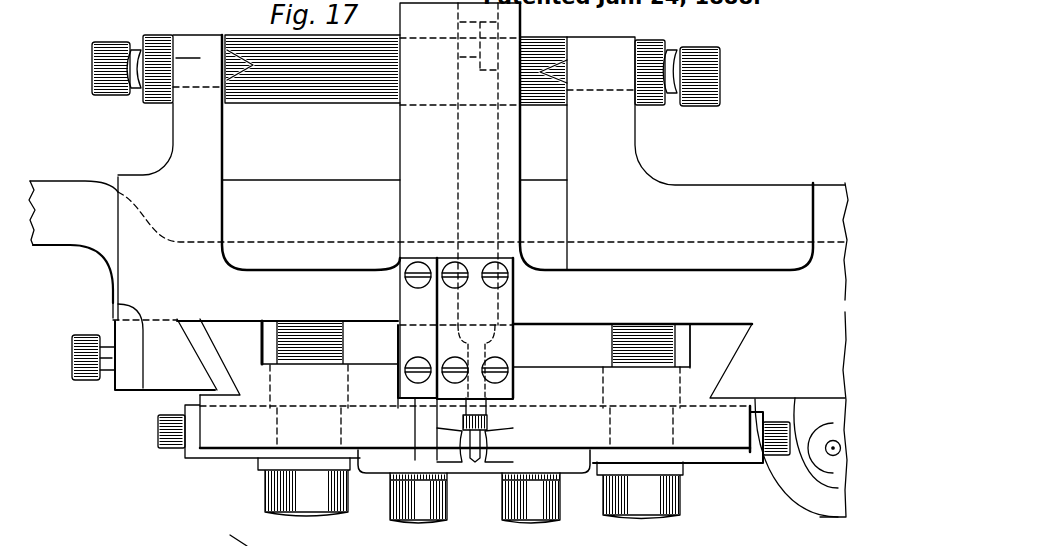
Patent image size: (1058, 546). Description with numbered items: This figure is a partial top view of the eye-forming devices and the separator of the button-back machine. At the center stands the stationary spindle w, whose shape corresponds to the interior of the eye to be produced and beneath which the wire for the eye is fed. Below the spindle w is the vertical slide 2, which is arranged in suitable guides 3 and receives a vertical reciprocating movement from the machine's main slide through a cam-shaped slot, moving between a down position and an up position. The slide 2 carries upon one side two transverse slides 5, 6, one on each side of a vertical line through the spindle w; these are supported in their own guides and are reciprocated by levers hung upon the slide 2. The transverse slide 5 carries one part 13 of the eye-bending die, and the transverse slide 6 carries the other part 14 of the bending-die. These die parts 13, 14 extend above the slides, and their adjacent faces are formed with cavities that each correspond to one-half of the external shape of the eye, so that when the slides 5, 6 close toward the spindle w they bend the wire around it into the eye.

The vertical slide 2 is at (476, 364).
The guides 3 is at (480, 358).
The transverse slide 5 is at (678, 442).
The transverse slide 6 is at (467, 435).
The eye-bending die part 13 is at (499, 445).
The bending-die part 14 is at (449, 445).
The spindle w is at (478, 463).